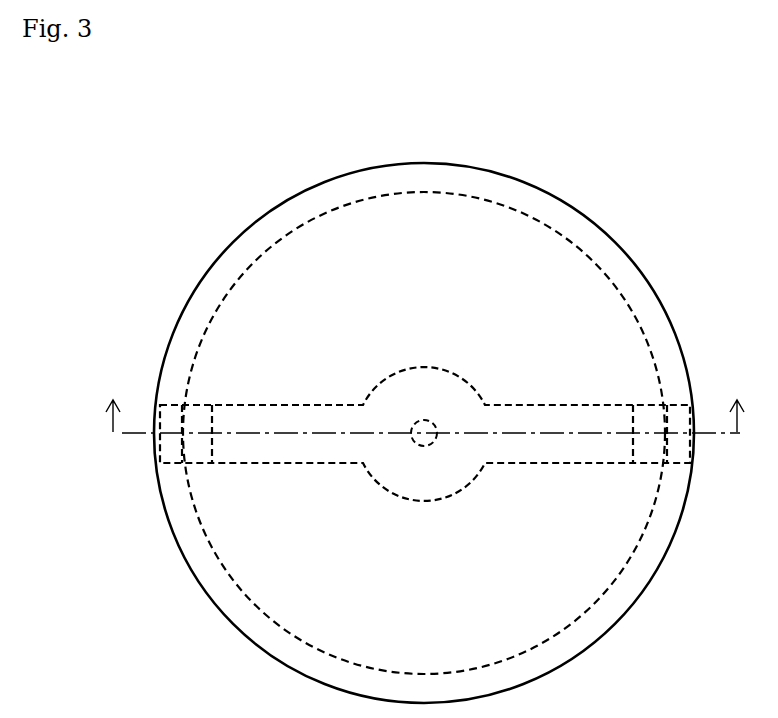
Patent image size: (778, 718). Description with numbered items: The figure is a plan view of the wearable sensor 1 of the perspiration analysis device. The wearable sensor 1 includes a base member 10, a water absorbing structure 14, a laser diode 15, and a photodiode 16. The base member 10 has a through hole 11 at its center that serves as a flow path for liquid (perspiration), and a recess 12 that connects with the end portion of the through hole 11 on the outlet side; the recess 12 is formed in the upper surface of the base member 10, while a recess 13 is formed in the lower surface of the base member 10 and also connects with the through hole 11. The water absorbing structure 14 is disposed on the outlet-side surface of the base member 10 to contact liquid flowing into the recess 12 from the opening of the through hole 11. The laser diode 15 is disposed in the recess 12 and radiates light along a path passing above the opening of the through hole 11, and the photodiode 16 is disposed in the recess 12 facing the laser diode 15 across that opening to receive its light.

The wearable sensor 1 is at (276, 155).
The base member 10 is at (424, 420).
The through hole 11 is at (418, 423).
The recess 12 is at (520, 405).
The recess 13 is at (262, 253).
The water absorbing structure 14 is at (518, 178).
The laser diode 15 is at (182, 462).
The photodiode 16 is at (670, 462).